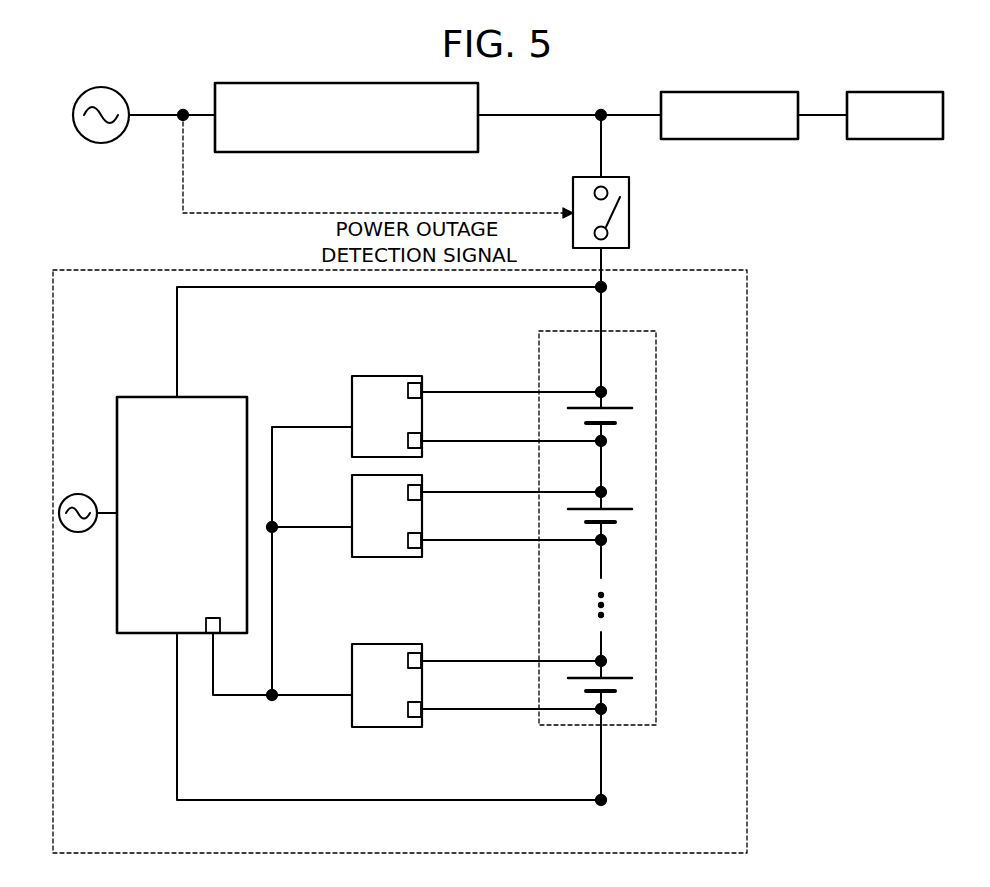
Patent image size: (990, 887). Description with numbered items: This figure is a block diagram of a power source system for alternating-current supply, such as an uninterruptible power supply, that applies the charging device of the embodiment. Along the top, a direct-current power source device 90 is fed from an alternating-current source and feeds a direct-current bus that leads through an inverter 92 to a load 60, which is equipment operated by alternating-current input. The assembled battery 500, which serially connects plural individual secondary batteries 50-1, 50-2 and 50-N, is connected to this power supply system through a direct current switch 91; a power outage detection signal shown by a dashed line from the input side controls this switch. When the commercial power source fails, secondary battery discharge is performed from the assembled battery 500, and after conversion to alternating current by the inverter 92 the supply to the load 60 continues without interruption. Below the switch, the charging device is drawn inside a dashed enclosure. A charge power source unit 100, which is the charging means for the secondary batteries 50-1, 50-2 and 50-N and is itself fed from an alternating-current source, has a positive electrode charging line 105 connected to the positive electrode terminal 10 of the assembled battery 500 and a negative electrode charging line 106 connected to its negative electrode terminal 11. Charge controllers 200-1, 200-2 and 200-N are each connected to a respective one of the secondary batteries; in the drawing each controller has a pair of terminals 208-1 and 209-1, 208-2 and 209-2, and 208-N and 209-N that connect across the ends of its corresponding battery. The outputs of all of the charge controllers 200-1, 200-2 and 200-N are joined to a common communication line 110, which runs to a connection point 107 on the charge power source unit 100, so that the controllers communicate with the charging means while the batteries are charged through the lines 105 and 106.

The positive electrode terminal 10 is at (606, 290).
The negative electrode terminal 11 is at (606, 803).
The secondary battery 50-1 is at (620, 415).
The secondary battery 50-2 is at (620, 518).
The secondary battery 50-N is at (620, 687).
The load 60 is at (897, 139).
The direct-current power source device 90 is at (362, 152).
The direct current switch 91 is at (629, 213).
The inverter 92 is at (730, 139).
The charge power source unit 100 is at (158, 397).
The positive electrode charging line 105 is at (352, 287).
The negative electrode charging line 106 is at (323, 800).
The output terminal 107 is at (220, 633).
The communication line 110 is at (242, 695).
The charge controller 200-1 is at (352, 387).
The charge controller 200-2 is at (389, 557).
The charge controller 200-N is at (389, 727).
The positive output terminal 208-1 is at (421, 390).
The positive output terminal 208-2 is at (421, 490).
The positive output terminal 208-N is at (421, 659).
The negative output terminal 209-1 is at (421, 438).
The negative output terminal 209-2 is at (421, 538).
The negative output terminal 209-N is at (421, 707).
The assembled battery 500 is at (656, 360).